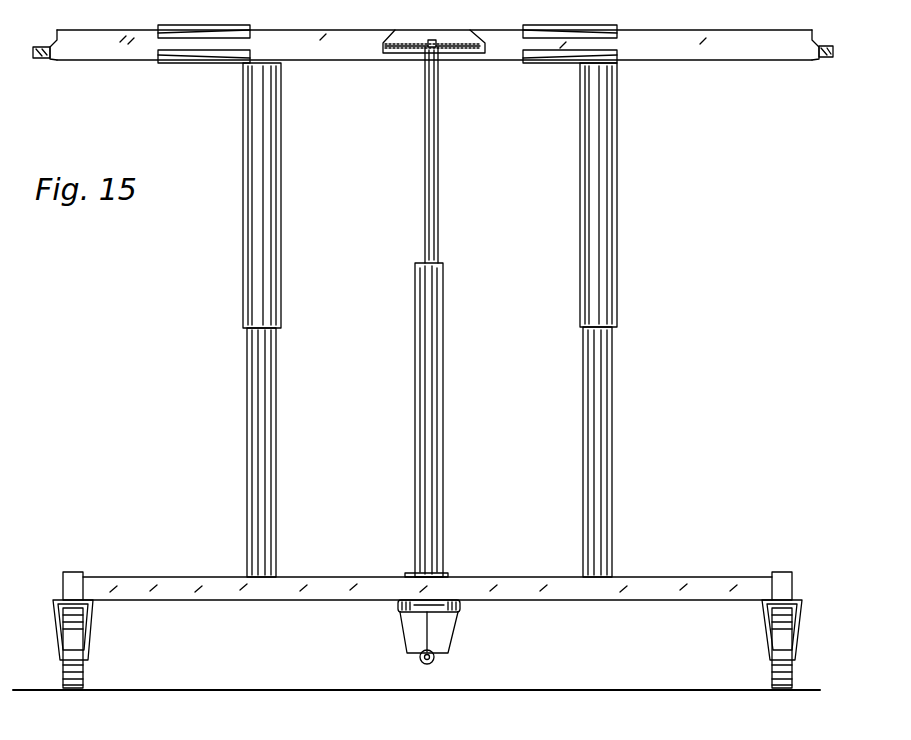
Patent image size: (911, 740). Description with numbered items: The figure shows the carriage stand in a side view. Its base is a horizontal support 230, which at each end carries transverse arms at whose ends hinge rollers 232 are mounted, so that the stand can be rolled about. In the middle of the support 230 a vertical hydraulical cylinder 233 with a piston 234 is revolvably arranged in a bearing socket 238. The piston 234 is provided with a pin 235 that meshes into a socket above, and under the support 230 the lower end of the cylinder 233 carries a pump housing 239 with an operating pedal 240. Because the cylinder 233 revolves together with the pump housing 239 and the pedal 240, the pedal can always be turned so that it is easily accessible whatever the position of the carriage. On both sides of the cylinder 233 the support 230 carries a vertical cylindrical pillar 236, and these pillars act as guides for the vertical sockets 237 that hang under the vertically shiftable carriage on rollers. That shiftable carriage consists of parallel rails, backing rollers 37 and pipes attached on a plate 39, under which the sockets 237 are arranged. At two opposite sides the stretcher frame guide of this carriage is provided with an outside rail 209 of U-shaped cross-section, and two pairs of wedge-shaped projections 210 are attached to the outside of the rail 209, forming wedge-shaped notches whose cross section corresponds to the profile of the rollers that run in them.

The backing roller 37 is at (44, 56).
The plate 39 is at (410, 47).
The outside rail 209 is at (722, 50).
The wedge-shaped projection 210 is at (177, 58).
The horizontal support 230 is at (220, 587).
The hinge roller 232 is at (70, 652).
The hydraulical cylinder 233 is at (435, 337).
The piston 234 is at (435, 133).
The pin 235 is at (443, 50).
The vertical cylindrical pillar 236 is at (263, 378).
The vertical socket 237 is at (263, 117).
The bearing socket 238 is at (447, 575).
The pump housing 239 is at (442, 632).
The operating pedal 240 is at (460, 612).